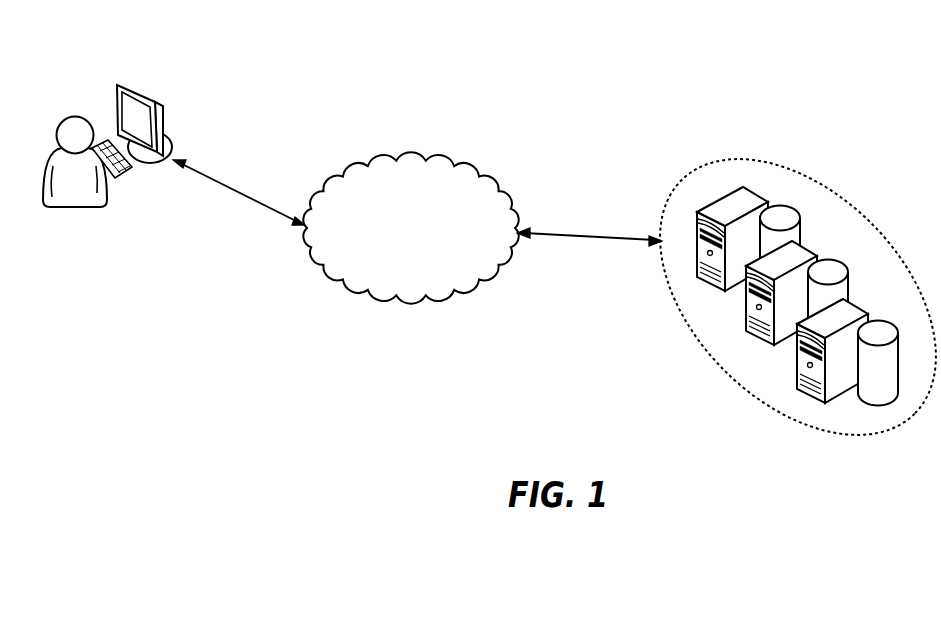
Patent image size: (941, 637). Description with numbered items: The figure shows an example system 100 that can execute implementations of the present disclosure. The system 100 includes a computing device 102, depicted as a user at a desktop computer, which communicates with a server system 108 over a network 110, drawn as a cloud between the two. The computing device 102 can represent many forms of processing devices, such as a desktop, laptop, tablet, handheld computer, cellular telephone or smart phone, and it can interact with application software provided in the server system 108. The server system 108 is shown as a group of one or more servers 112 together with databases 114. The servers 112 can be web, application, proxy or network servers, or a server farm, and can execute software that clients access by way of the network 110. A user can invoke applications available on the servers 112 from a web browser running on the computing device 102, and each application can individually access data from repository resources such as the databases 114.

The system 100 is at (660, 63).
The computing device 102 is at (160, 162).
The server system 108 is at (855, 210).
The network 110 is at (410, 158).
The servers 112 is at (725, 192).
The databases 114 is at (776, 205).